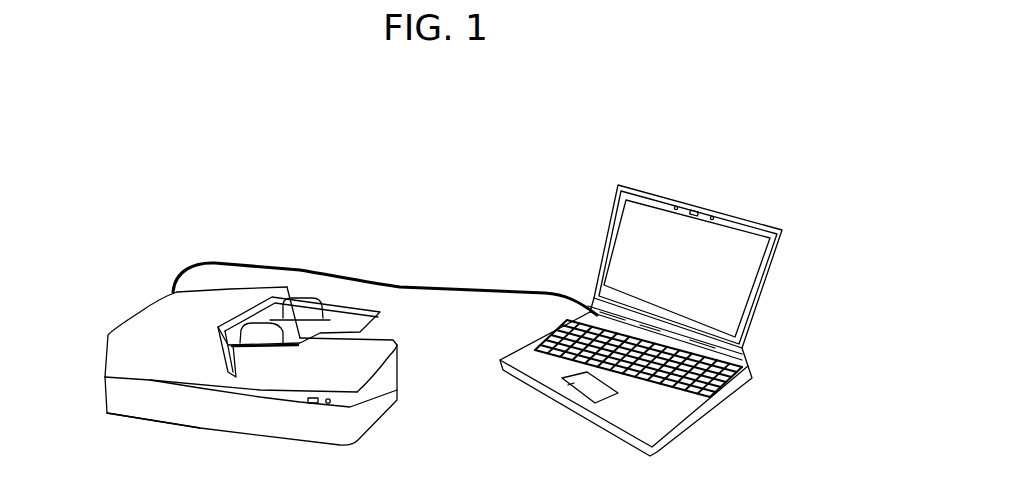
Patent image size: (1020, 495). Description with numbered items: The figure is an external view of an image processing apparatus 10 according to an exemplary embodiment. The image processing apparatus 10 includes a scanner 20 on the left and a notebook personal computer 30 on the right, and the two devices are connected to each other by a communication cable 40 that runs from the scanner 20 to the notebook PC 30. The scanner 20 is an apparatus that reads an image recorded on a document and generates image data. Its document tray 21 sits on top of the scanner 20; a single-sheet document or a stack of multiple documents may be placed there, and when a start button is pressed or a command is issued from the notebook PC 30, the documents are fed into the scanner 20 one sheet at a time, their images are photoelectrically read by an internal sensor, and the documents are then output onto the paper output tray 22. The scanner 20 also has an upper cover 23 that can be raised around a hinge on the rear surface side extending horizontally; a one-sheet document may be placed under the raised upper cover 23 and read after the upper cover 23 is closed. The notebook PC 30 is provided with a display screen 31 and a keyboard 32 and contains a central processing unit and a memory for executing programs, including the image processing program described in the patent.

The image processing apparatus 10 is at (452, 128).
The scanner 20 is at (150, 297).
The document tray 21 is at (299, 320).
The paper output tray 22 is at (345, 350).
The upper cover 23 is at (357, 384).
The notebook personal computer 30 is at (548, 241).
The display screen 31 is at (641, 231).
The keyboard 32 is at (567, 327).
The communication cable 40 is at (383, 285).